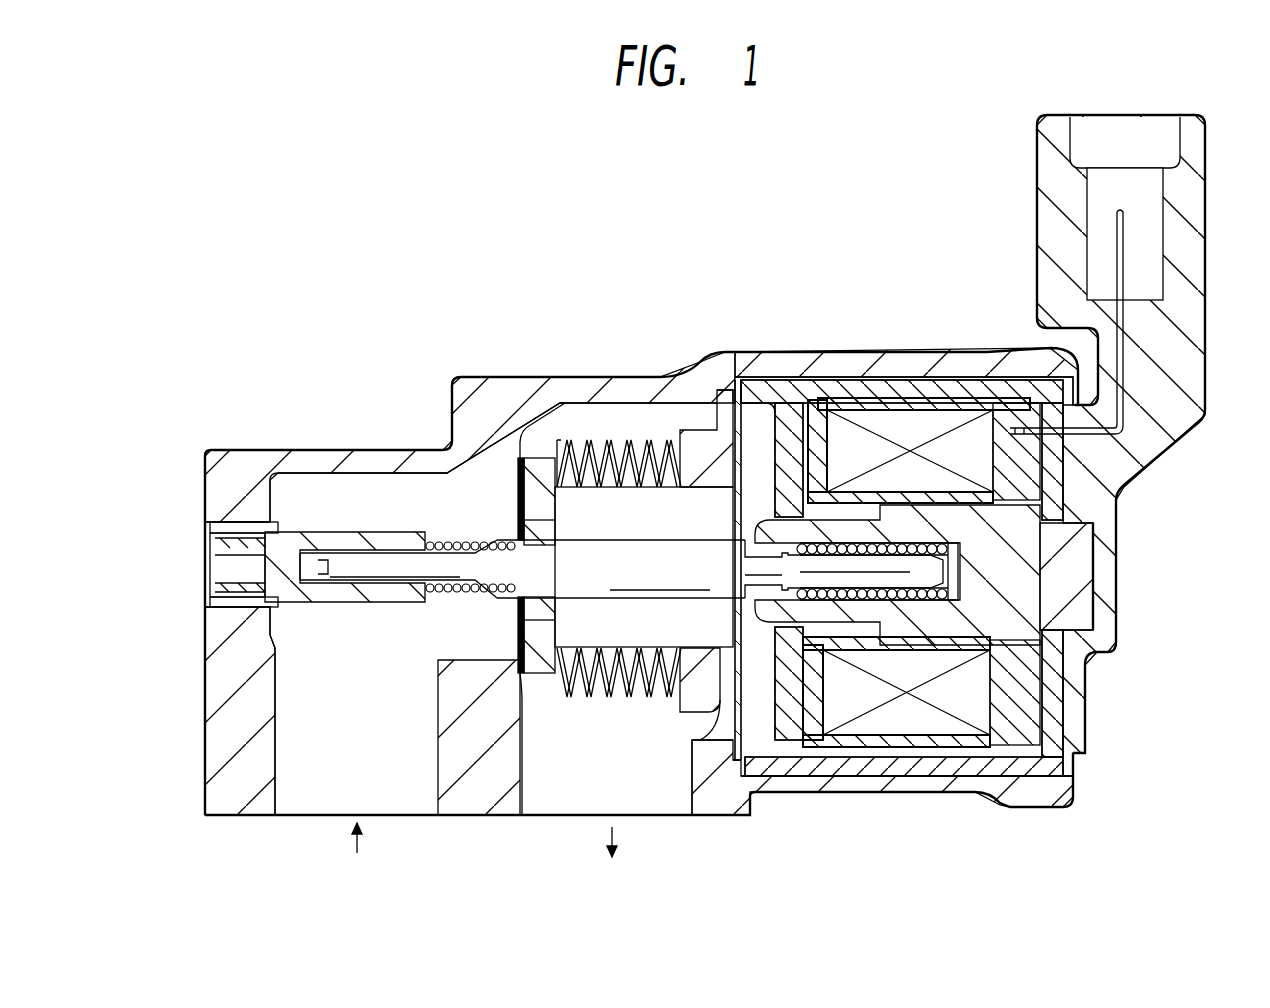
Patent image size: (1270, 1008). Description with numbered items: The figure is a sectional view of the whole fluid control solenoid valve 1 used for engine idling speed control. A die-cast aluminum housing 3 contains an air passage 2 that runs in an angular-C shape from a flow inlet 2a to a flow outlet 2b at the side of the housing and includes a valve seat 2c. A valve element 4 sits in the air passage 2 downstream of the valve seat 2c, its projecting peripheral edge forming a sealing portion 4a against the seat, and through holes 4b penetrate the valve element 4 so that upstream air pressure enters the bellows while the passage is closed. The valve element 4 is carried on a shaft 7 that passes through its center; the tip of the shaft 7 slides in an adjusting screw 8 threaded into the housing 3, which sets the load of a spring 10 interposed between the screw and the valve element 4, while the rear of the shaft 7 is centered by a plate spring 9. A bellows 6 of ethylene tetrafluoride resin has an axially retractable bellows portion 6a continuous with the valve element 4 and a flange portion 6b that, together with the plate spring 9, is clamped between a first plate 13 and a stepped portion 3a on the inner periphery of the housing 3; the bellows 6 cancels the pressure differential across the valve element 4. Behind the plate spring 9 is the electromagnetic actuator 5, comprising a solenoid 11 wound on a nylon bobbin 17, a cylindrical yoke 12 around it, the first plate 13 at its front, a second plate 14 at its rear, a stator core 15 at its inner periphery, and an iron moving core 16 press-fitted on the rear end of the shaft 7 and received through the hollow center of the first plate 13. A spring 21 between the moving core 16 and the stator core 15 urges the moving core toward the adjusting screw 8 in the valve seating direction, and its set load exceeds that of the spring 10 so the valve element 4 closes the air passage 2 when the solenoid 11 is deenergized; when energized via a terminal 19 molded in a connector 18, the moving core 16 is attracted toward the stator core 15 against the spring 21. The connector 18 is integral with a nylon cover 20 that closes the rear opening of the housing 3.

The fluid control solenoid valve 1 is at (607, 330).
The air passage 2 is at (360, 694).
The flow inlet 2a is at (297, 817).
The flow outlet 2b is at (668, 817).
The valve seat 2c is at (506, 672).
The housing 3 is at (253, 446).
The stepped portion 3a is at (705, 396).
The valve element 4 is at (530, 455).
The sealing portion 4a is at (522, 690).
The through holes 4b is at (518, 520).
The electromagnetic actuator 5 is at (985, 375).
The bellows 6 is at (588, 700).
The bellows portion 6a is at (580, 438).
The flange portion 6b is at (727, 392).
The shaft 7 is at (644, 542).
The adjusting screw 8 is at (322, 532).
The plate spring 9 is at (753, 792).
The spring 10 is at (443, 541).
The solenoid 11 is at (938, 727).
The cylindrical yoke 12 is at (930, 378).
The first plate 13 is at (750, 392).
The second plate 14 is at (1052, 777).
The stator core 15 is at (1082, 580).
The moving core 16 is at (850, 518).
The bobbin 17 is at (808, 747).
The connector 18 is at (1198, 158).
The terminal 19 is at (1125, 228).
The cover 20 is at (1125, 628).
The spring 21 is at (893, 602).